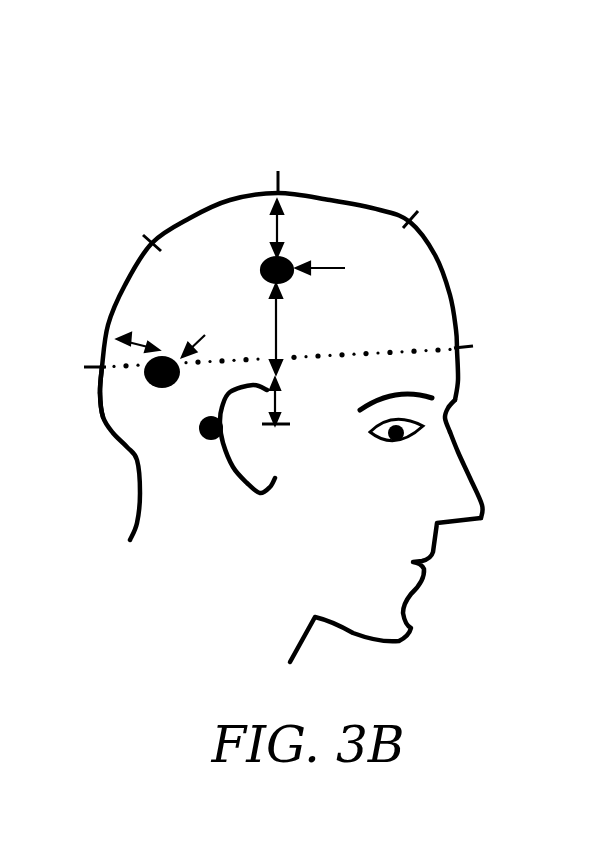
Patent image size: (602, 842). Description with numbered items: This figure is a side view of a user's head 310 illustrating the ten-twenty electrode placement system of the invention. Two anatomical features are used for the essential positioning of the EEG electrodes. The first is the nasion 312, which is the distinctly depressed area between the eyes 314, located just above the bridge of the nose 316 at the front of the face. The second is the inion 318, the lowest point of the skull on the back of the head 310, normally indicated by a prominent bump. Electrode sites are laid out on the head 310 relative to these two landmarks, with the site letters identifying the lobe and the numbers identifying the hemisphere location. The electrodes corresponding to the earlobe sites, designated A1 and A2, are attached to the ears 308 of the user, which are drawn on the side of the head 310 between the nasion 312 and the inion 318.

The ears 308 is at (198, 467).
The head 310 is at (424, 114).
The nasion 312 is at (474, 410).
The eyes 314 is at (440, 438).
The nose 316 is at (508, 514).
The inion 318 is at (97, 432).